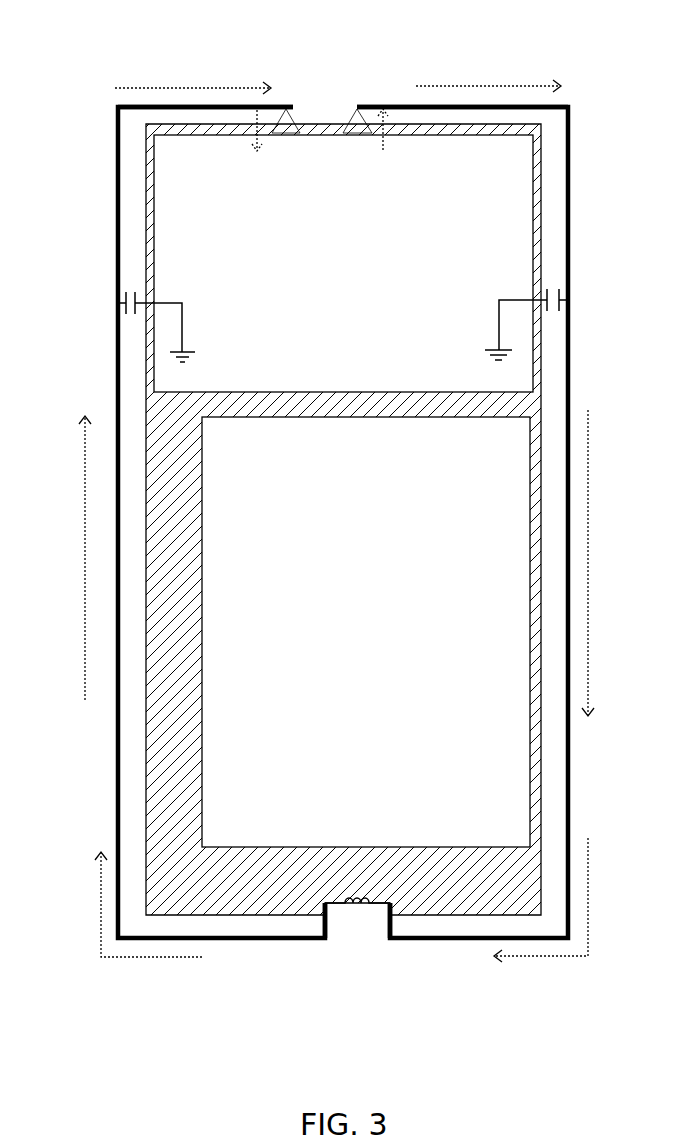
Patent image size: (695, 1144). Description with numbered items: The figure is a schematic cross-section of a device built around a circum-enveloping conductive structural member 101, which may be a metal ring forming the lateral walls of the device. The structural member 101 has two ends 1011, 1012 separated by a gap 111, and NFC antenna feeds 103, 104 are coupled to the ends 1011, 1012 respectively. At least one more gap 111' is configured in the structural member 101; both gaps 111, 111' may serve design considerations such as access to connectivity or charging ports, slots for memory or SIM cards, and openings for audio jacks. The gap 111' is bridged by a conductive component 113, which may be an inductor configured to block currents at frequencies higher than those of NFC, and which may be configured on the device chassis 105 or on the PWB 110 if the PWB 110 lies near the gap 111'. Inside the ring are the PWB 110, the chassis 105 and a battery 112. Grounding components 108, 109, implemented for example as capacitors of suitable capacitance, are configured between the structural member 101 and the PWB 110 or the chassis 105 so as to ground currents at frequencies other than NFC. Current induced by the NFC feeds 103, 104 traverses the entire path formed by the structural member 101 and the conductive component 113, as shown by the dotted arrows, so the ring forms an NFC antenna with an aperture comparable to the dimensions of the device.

The circum-enveloping conductive structural member 101 is at (108, 103).
The first end of structural member 1011 is at (252, 105).
The second end of structural member 1012 is at (380, 103).
The gap 111 is at (325, 64).
The additional gap 111' is at (357, 974).
The NFC antenna feed 103 is at (282, 136).
The NFC antenna feed 104 is at (357, 128).
The device chassis 105 is at (160, 785).
The grounding component 108 is at (137, 283).
The grounding component 109 is at (552, 283).
The PWB 110 is at (170, 183).
The battery 112 is at (366, 632).
The conductive component 113 is at (350, 885).